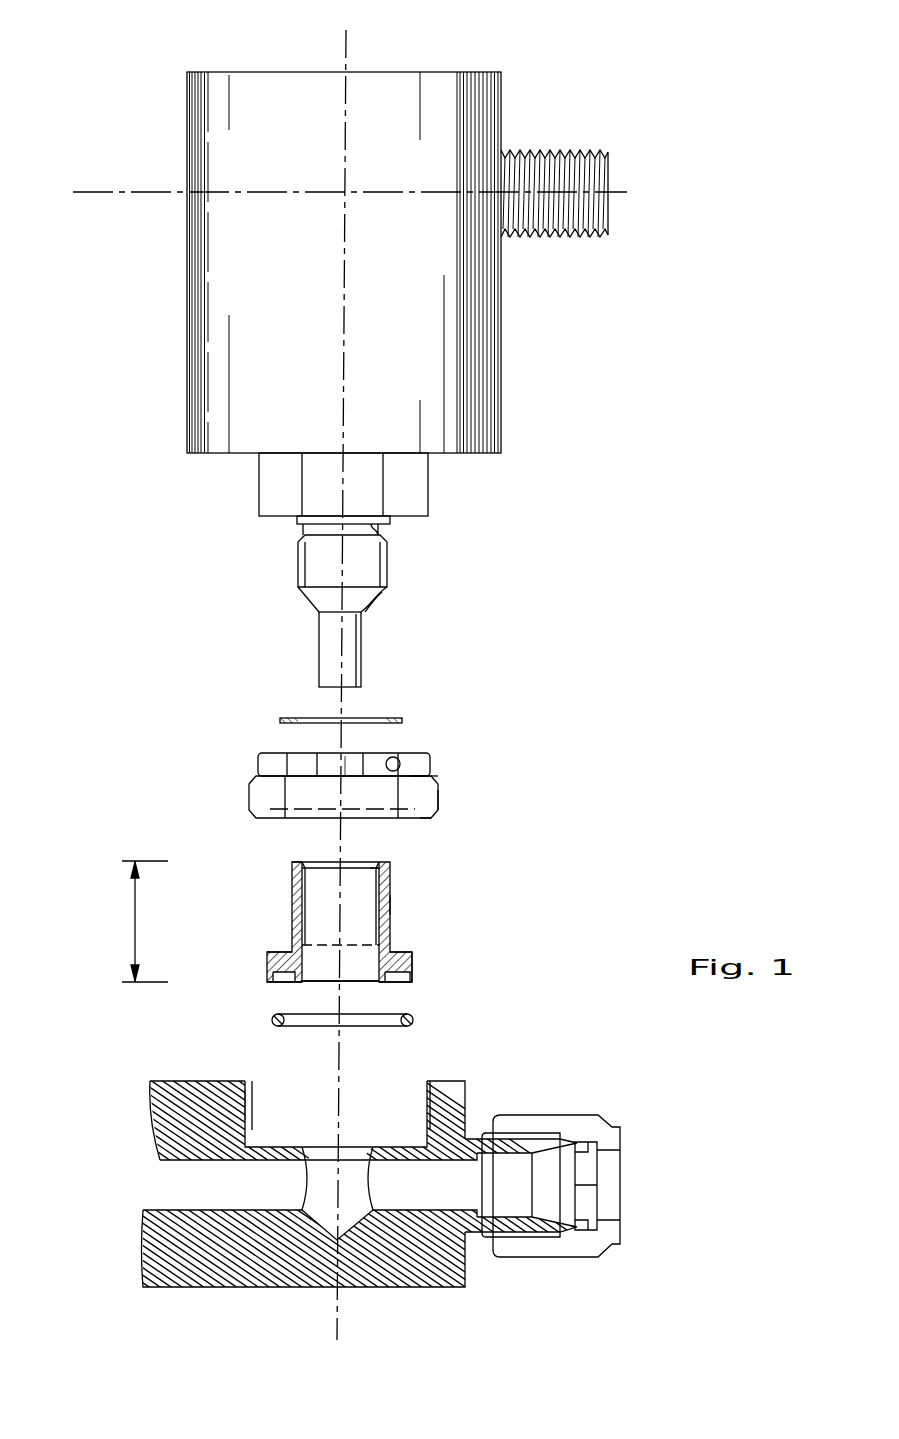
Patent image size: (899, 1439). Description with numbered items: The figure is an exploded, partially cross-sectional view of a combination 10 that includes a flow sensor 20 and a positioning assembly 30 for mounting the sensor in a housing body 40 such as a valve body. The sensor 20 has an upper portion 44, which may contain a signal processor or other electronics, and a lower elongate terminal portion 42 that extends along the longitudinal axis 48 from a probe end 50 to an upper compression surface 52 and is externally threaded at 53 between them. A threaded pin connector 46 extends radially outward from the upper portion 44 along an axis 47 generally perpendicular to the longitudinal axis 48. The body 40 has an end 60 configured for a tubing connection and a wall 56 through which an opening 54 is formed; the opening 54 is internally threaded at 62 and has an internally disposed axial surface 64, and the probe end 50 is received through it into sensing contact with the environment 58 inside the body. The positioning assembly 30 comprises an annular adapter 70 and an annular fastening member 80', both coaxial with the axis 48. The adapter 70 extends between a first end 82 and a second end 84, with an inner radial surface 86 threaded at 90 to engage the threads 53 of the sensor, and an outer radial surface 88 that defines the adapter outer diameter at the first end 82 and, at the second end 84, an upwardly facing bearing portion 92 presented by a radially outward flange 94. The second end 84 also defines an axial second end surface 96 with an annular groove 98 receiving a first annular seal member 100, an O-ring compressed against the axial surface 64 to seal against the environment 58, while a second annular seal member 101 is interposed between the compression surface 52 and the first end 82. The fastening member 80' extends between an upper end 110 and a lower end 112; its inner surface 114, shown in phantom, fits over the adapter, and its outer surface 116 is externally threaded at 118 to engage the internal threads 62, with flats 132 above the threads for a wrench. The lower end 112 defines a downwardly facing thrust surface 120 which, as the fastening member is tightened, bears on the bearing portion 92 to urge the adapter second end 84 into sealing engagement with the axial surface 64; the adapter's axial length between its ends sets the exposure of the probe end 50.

The combination 10 is at (735, 228).
The flow sensor 20 is at (342, 251).
The positioning assembly 30 is at (415, 878).
The housing body 40 is at (378, 1170).
The terminal portion 42 is at (355, 570).
The upper portion 44 is at (167, 73).
The pin connector 46 is at (596, 150).
The connector axis 47 is at (628, 192).
The longitudinal axis 48 is at (347, 48).
The probe end 50 is at (318, 665).
The compression surface 52 is at (268, 518).
The external threads 53 is at (300, 558).
The opening 54 is at (337, 1114).
The wall 56 is at (483, 1133).
The environment 58 is at (310, 1185).
The end 60 is at (655, 1103).
The internal threads 62 is at (252, 1106).
The axial surface 64 is at (407, 1146).
The adapter 70 is at (324, 961).
The fastening member 80' is at (322, 773).
The first end 82 is at (292, 863).
The second end 84 is at (268, 972).
The inner radial surface 86 is at (402, 988).
The outer radial surface 88 is at (391, 905).
The threaded configuration 90 is at (378, 868).
The bearing portion 92 is at (393, 958).
The flange 94 is at (402, 975).
The second end surface 96 is at (302, 987).
The annular groove 98 is at (283, 971).
The first annular seal member 100 is at (397, 1042).
The second annular seal member 101 is at (290, 716).
The upper end 110 is at (258, 755).
The lower end 112 is at (257, 815).
The inner surface 114 is at (395, 757).
The outer surface 116 is at (432, 777).
The external threads 118 is at (438, 800).
The thrust surface 120 is at (430, 816).
The flats 132 is at (352, 760).